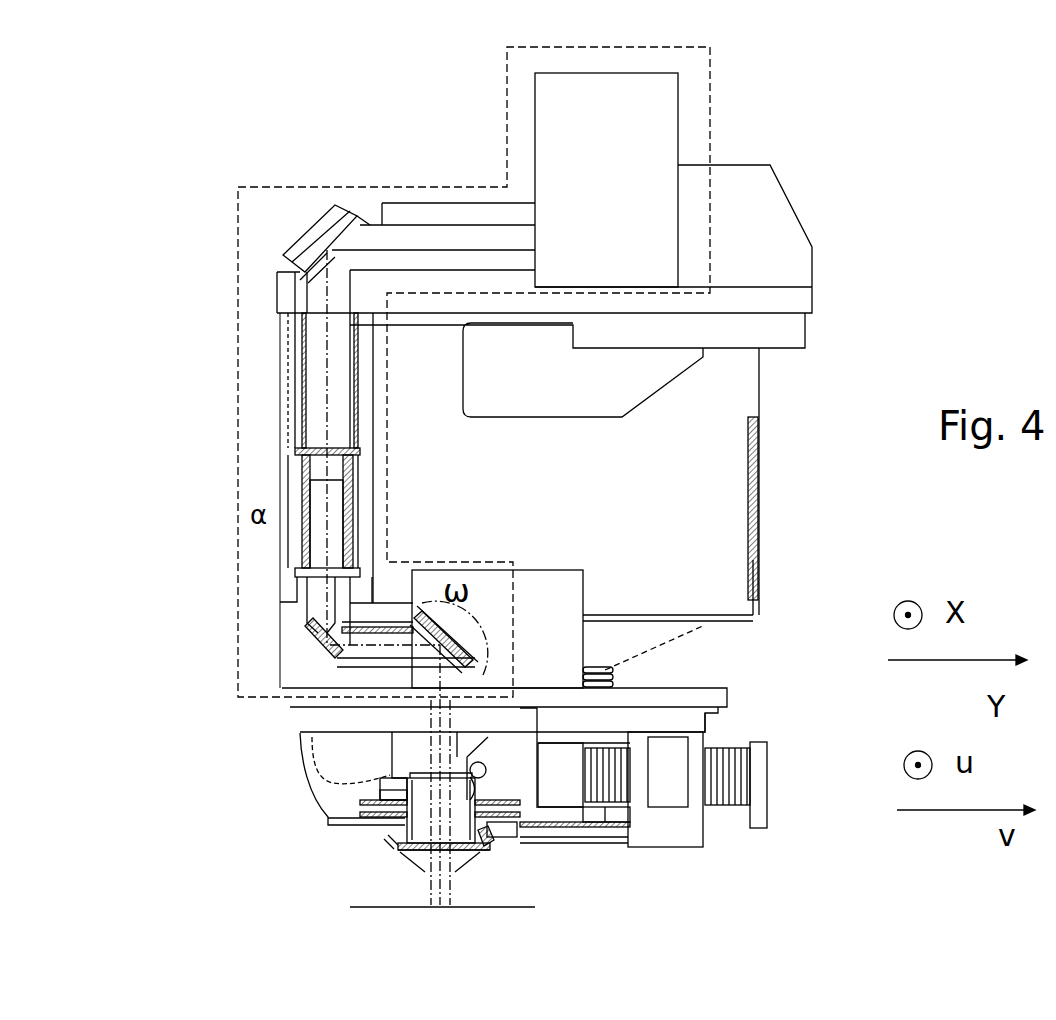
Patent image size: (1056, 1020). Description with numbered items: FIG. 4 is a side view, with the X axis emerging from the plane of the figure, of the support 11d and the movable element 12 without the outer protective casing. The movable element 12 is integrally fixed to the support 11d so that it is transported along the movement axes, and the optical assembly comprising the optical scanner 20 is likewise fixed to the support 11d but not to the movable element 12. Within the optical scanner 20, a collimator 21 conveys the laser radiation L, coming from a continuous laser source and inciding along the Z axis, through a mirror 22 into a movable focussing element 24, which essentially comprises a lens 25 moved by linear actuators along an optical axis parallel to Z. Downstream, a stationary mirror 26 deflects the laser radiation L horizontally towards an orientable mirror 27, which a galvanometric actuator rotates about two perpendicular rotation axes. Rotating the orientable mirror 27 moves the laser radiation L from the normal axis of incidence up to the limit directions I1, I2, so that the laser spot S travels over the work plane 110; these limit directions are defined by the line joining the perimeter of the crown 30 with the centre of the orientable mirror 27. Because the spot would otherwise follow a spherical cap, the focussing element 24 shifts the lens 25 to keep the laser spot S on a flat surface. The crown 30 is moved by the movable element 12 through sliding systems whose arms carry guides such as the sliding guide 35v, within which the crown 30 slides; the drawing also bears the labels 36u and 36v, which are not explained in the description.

The optical scanner 20 is at (438, 188).
The collimator 21 is at (635, 182).
The mirror 22 is at (310, 230).
The support 11d is at (583, 426).
The laser radiation L is at (330, 292).
The movable focussing element 24 is at (303, 395).
The lens 25 is at (322, 448).
The stationary mirror 26 is at (313, 633).
The orientable mirror 27 is at (460, 643).
The laser spot S is at (441, 799).
The limit direction I1 is at (419, 826).
The limit direction I2 is at (464, 826).
The movable element 12 is at (302, 800).
The u-drive 36u is at (306, 779).
The crown 30 is at (395, 831).
The work plane 110 is at (406, 925).
The sliding guide 35v is at (480, 830).
The v-drive 36v is at (679, 777).